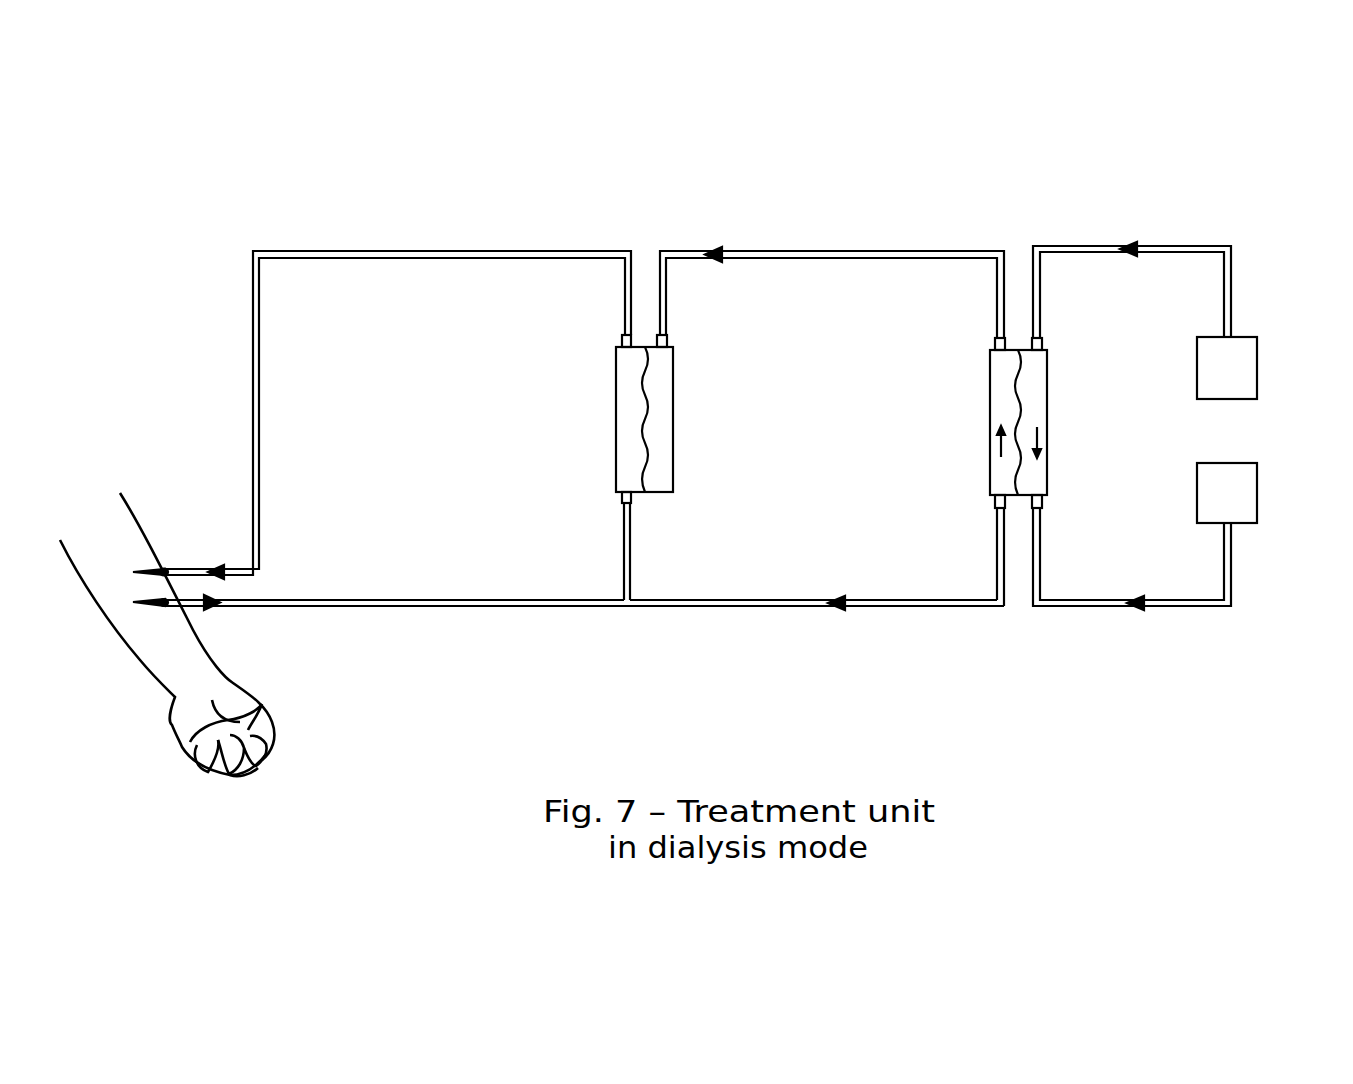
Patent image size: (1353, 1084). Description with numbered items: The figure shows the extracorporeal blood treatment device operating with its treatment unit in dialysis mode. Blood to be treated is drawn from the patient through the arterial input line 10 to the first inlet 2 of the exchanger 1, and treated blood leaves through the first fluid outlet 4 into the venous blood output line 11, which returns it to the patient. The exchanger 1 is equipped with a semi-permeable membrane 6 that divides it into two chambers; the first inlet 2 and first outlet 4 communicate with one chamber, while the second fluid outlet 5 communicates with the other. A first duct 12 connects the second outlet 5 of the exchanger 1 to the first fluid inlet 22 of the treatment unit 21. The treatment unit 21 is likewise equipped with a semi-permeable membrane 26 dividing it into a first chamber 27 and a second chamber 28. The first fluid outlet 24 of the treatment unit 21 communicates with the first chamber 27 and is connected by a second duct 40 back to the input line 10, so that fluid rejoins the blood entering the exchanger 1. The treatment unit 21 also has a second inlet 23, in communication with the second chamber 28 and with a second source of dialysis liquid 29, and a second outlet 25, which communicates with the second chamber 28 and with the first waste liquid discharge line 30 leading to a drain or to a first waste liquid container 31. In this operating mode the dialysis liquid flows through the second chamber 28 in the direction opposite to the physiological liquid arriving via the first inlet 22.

The exchanger 1 is at (602, 410).
The first inlet 2 is at (620, 497).
The first fluid outlet 4 is at (621, 342).
The second fluid outlet 5 is at (668, 340).
The semi-permeable membrane 6 is at (645, 418).
The input line 10 is at (440, 607).
The blood output line 11 is at (253, 390).
The first duct 12 is at (822, 250).
The treatment unit 21 is at (996, 395).
The first fluid inlet 22 is at (995, 343).
The second inlet 23 is at (1043, 508).
The first fluid outlet 24 is at (995, 502).
The second outlet 25 is at (1043, 343).
The semi-permeable membrane 26 is at (1018, 420).
The first chamber 27 is at (1000, 388).
The second chamber 28 is at (1040, 478).
The second source of dialysis liquid 29 is at (1257, 490).
The first waste liquid discharge line 30 is at (1167, 246).
The first waste liquid container 31 is at (1257, 378).
The second duct 40 is at (793, 607).